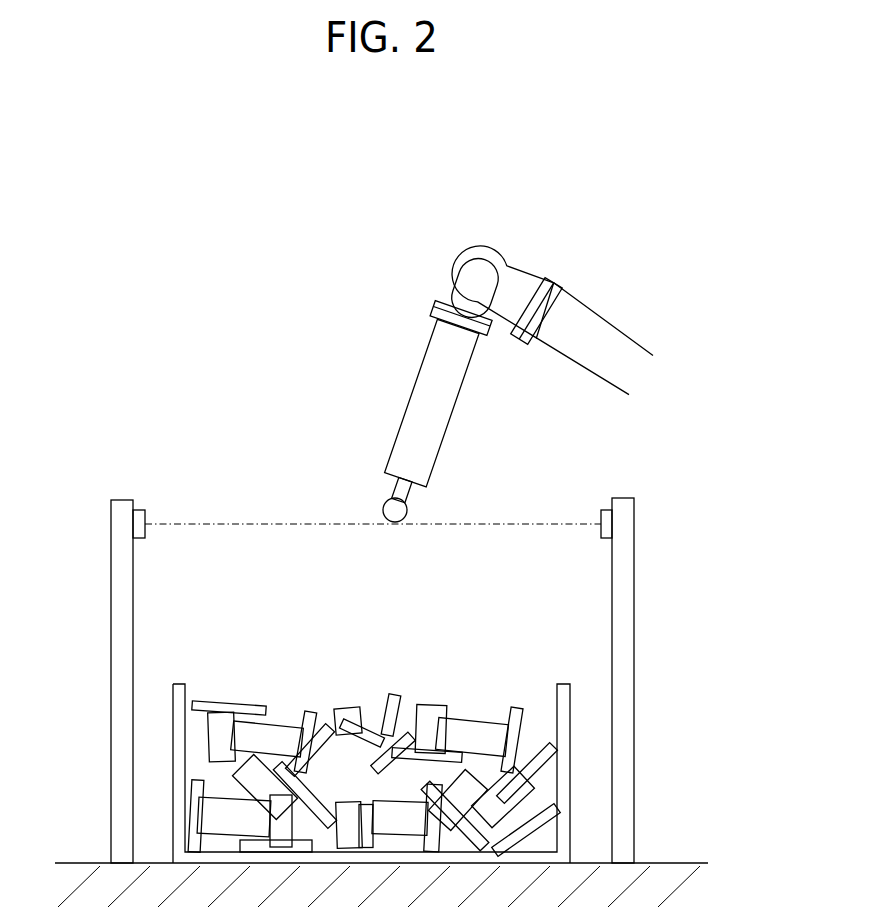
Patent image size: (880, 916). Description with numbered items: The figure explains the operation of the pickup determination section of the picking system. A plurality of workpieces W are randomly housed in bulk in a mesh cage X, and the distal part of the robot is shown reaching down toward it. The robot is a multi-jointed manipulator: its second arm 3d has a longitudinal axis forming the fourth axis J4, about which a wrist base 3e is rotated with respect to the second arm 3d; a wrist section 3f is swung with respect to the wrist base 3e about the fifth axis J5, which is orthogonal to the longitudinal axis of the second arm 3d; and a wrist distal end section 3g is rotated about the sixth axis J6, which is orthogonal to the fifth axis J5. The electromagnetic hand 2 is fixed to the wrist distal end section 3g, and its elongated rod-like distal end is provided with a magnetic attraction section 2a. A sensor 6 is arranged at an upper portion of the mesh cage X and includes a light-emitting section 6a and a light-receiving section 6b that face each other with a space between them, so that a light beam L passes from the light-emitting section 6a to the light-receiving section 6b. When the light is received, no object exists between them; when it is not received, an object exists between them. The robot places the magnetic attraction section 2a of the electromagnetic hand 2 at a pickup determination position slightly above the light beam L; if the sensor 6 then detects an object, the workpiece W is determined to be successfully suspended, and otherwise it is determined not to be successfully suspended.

The electromagnetic hand 2 is at (457, 410).
The magnetic attraction section 2a is at (383, 510).
The second arm 3d is at (597, 321).
The wrist base 3e is at (515, 277).
The wrist section 3f is at (455, 287).
The wrist distal end section 3g is at (438, 309).
The fourth axis J4 is at (571, 269).
The fifth axis J5 is at (461, 249).
The sixth axis J6 is at (498, 342).
The sensor 6 is at (662, 496).
The light-emitting section 6a is at (138, 510).
The light-receiving section 6b is at (603, 510).
The light beam L is at (497, 527).
The workpiece W is at (229, 703).
The mesh cage X is at (166, 770).